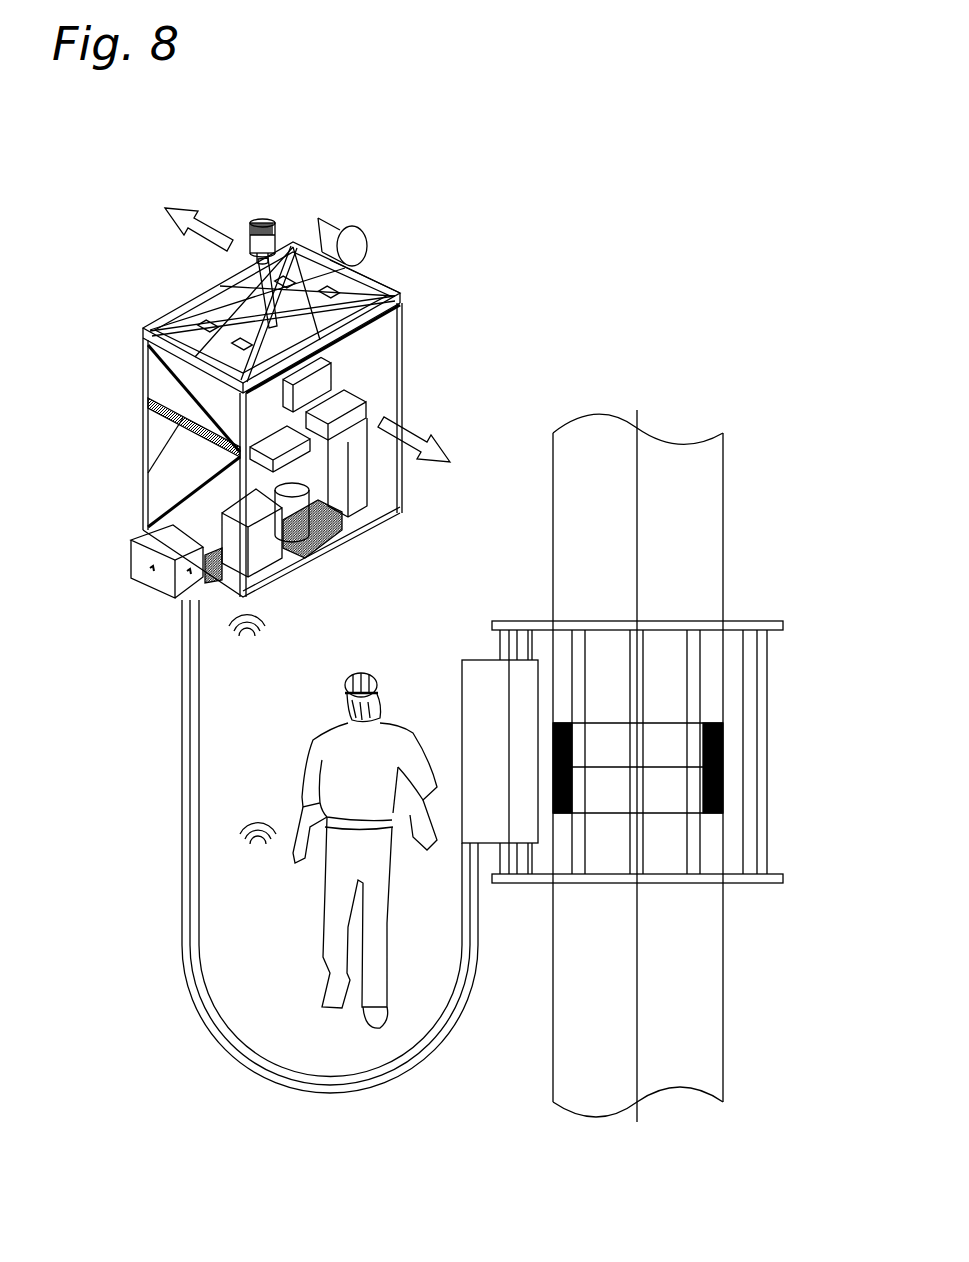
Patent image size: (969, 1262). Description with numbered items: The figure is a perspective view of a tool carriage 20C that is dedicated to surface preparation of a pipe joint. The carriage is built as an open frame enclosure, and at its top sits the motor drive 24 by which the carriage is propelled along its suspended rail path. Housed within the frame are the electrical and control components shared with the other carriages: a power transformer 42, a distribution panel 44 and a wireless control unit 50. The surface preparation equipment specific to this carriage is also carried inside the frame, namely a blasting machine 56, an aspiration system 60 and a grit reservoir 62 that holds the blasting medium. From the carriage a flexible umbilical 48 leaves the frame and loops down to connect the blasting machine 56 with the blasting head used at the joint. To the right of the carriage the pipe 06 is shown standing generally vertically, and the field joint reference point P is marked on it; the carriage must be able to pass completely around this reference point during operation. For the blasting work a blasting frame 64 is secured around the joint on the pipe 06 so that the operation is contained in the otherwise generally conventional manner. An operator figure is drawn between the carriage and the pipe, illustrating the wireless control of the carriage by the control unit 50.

The tool carriage 20C is at (160, 410).
The motor drive 24 is at (236, 330).
The wireless control unit 50 is at (332, 352).
The distribution panel 44 is at (360, 400).
The power transformer 42 is at (364, 481).
The aspiration system 60 is at (299, 466).
The grit reservoir 62 is at (303, 507).
The blasting machine 56 is at (267, 550).
The umbilical 48 is at (184, 842).
The pipe 06 is at (671, 490).
The field joint reference point P is at (638, 765).
The blasting frame 64 is at (750, 886).